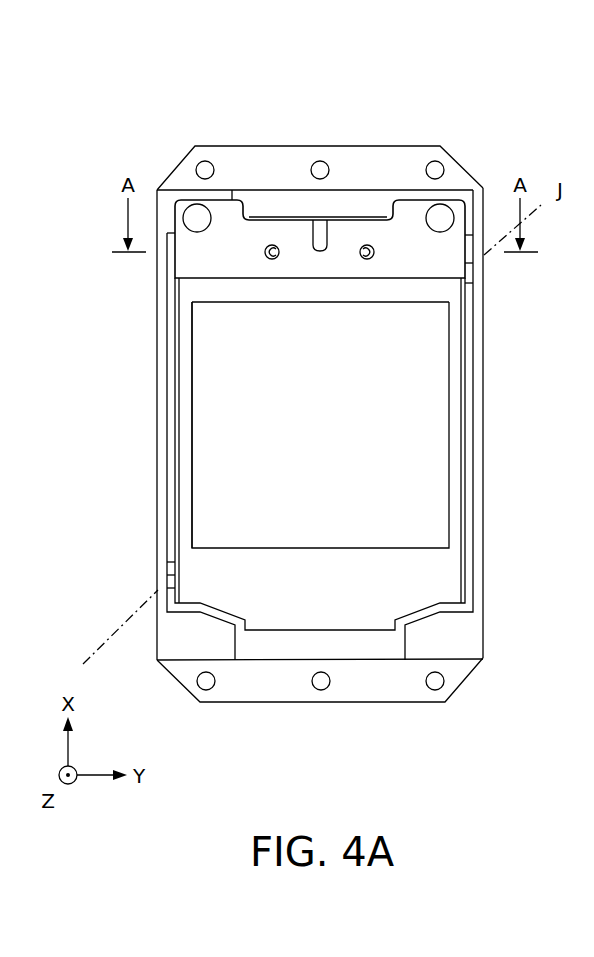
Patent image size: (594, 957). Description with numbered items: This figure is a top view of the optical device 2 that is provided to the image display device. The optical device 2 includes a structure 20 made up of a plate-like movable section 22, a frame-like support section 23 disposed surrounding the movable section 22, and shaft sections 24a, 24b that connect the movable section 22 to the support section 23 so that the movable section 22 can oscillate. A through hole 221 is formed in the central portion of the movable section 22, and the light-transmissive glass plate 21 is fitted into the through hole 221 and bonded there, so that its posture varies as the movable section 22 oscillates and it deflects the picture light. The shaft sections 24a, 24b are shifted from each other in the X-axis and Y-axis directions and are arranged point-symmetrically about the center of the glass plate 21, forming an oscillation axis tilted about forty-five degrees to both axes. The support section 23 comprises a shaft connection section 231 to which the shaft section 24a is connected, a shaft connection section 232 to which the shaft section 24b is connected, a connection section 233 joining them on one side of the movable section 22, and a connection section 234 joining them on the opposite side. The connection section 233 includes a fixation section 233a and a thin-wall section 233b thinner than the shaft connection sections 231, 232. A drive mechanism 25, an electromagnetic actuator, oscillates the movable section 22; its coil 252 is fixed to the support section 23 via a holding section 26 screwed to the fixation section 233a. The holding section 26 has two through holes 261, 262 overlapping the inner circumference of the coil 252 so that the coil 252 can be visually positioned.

The optical device 2 is at (204, 138).
The structure 20 is at (356, 706).
The glass plate 21 is at (217, 402).
The movable section 22 is at (183, 498).
The through hole 221 is at (190, 332).
The support section 23 is at (486, 557).
The shaft connection section 231 is at (478, 494).
The shaft connection section 232 is at (164, 440).
The connection section 233 is at (372, 97).
The fixation section 233a is at (463, 172).
The thin-wall section 233b is at (399, 163).
The connection section 234 is at (262, 688).
The shaft section 24a is at (467, 275).
The shaft section 24b is at (173, 568).
The drive mechanism 25 is at (280, 206).
The coil 252 is at (321, 233).
The holding section 26 is at (420, 263).
The through hole 261 is at (368, 259).
The through hole 262 is at (264, 255).